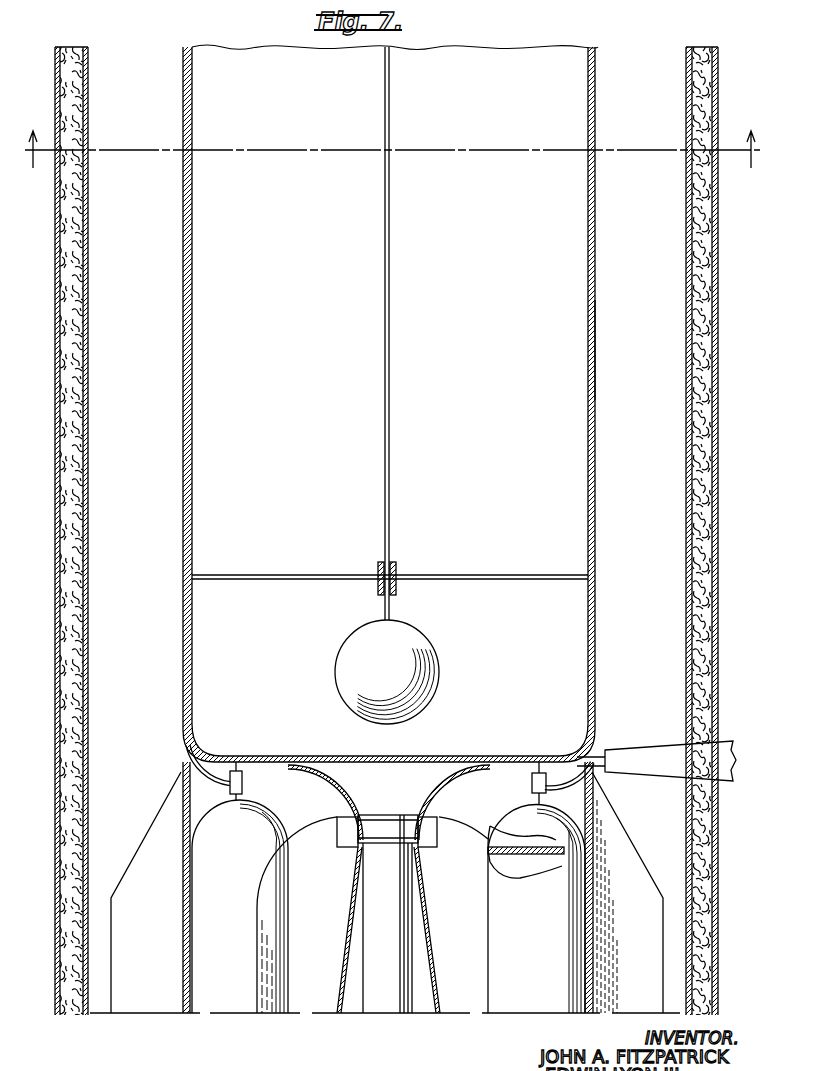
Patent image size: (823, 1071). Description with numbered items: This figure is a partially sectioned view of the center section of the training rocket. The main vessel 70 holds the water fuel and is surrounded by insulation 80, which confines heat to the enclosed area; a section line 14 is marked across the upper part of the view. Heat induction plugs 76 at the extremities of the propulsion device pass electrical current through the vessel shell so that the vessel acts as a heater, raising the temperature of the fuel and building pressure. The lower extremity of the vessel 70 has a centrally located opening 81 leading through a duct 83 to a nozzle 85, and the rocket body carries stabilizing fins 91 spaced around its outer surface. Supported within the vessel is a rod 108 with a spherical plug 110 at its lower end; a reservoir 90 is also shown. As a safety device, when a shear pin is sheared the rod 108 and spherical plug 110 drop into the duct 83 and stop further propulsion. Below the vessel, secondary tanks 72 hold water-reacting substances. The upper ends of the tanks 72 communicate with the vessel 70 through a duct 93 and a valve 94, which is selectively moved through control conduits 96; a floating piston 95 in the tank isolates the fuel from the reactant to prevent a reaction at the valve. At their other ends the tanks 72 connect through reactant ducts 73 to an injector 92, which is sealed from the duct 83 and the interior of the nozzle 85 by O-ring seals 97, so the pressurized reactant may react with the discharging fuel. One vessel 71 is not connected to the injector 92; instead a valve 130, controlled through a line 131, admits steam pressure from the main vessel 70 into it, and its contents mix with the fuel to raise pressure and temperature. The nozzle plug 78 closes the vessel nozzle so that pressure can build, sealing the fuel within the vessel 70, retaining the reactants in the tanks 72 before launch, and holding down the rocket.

The section line 14- 14 is at (395, 138).
The vessel 70 is at (588, 342).
The vessel 71 is at (278, 822).
The tanks 72 is at (488, 900).
The ducts 73 is at (268, 962).
The heat induction plugs 76 is at (628, 757).
The nozzle plug 78 is at (389, 1010).
The insulation 80 is at (56, 348).
The opening 81 is at (480, 761).
The duct 83 is at (402, 812).
The nozzle 85 is at (430, 934).
The reservoir 90 is at (304, 575).
The stabilizing fins 91 is at (642, 894).
The injector 92 is at (346, 848).
The duct 93 is at (537, 768).
The valve 94 is at (532, 785).
The floating piston 95 is at (500, 832).
The control conduits 96 is at (597, 352).
The O-ring seals 97 is at (367, 845).
The rod 108 is at (387, 378).
The spherical plug 110 is at (427, 639).
The valve 130 is at (243, 785).
The line 131 is at (217, 779).